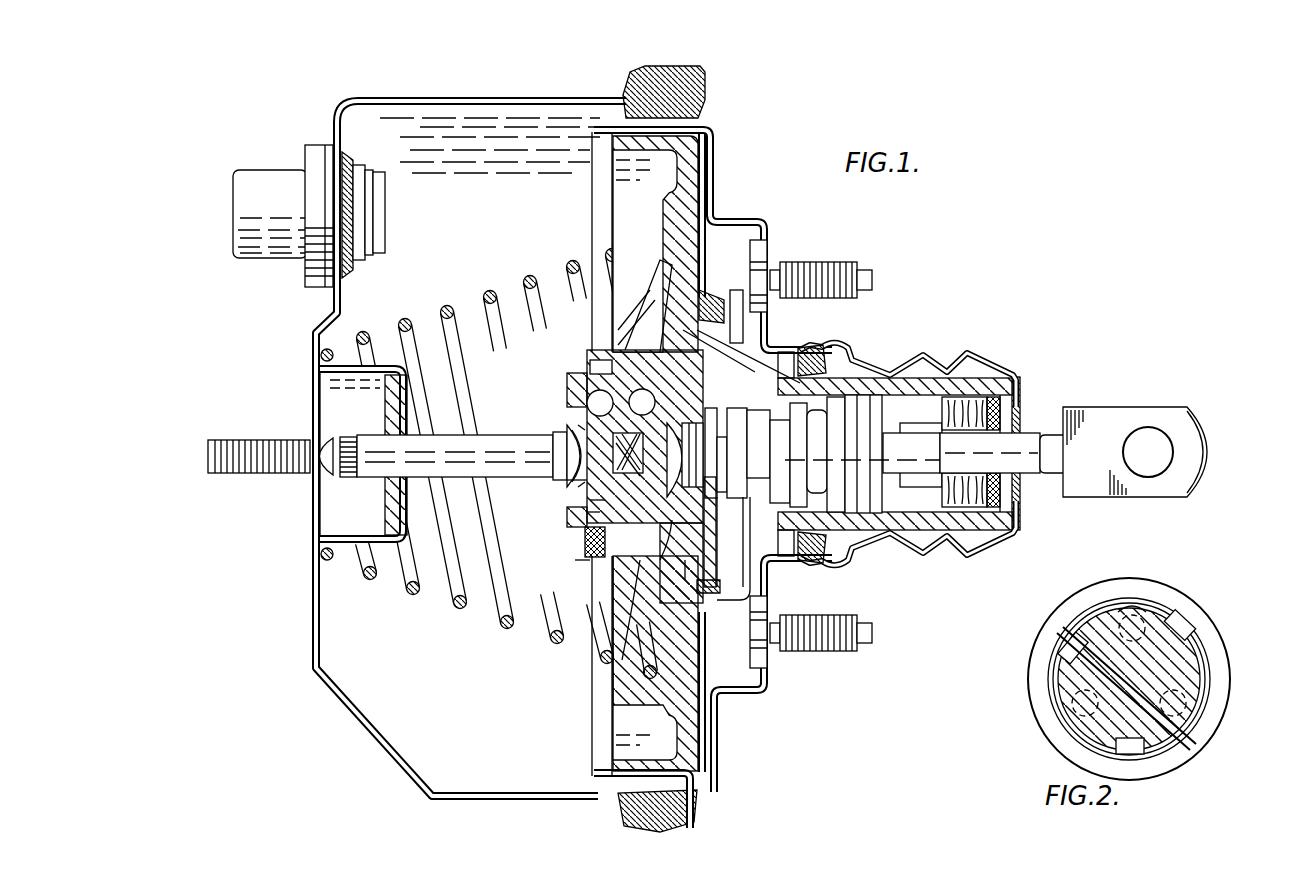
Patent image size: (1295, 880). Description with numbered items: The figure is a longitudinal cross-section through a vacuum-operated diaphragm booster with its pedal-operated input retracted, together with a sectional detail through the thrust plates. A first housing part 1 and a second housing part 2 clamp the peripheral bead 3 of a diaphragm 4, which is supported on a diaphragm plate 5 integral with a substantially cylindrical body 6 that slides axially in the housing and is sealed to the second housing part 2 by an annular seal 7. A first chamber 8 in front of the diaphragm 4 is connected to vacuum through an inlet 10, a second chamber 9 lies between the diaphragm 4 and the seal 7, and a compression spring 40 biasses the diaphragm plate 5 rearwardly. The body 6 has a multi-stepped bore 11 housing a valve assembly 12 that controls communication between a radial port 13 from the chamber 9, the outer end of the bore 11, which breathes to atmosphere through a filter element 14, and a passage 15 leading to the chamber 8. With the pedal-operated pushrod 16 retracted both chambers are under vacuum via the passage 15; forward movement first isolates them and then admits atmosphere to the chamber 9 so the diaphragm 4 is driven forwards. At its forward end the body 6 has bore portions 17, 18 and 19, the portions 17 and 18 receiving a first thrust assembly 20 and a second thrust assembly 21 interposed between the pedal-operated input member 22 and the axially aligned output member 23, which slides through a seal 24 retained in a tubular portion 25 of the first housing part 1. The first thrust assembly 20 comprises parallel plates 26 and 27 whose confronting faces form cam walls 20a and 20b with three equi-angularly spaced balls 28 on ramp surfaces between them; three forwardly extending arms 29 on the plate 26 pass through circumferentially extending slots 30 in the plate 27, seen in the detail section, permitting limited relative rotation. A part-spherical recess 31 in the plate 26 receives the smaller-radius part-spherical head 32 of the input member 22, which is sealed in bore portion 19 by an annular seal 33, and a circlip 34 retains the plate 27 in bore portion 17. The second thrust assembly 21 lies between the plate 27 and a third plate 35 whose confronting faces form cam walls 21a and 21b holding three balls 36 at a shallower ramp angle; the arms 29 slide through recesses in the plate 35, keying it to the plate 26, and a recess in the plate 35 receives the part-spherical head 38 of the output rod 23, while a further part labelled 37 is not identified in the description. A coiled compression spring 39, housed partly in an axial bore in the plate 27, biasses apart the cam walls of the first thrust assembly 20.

In FIG. 1, the first housing part 1 is at (490, 100).
In FIG. 1, the second housing part 2 is at (712, 128).
In FIG. 1, the peripheral bead 3 is at (630, 96).
In FIG. 1, the diaphragm 4 is at (597, 130).
In FIG. 1, the diaphragm plate 5 is at (690, 158).
In FIG. 1, the substantially cylindrical body 6 is at (900, 378).
In FIG. 2, the substantially cylindrical body 6 is at (1200, 740).
In FIG. 1, the annular seal 7 is at (812, 356).
In FIG. 1, the first chamber 8 is at (480, 714).
In FIG. 1, the second chamber 9 is at (717, 669).
In FIG. 1, the inlet 10 is at (268, 192).
In FIG. 1, the multi-stepped bore 11 is at (970, 397).
In FIG. 1, the valve assembly 12 is at (866, 515).
In FIG. 1, the radial port 13 is at (783, 562).
In FIG. 1, the filter element 14 is at (995, 512).
In FIG. 1, the passage 15 is at (767, 340).
In FIG. 1, the pedal-operated pushrod 16 is at (1046, 475).
In FIG. 1, the bore portion 17 is at (592, 365).
In FIG. 1, the bore portion 18 is at (683, 350).
In FIG. 1, the bore portion 19 is at (712, 305).
In FIG. 1, the first thrust assembly 20 is at (635, 530).
In FIG. 1, the cam wall 20a is at (597, 535).
In FIG. 1, the cam wall 20b is at (692, 430).
In FIG. 1, the second thrust assembly 21 is at (588, 500).
In FIG. 1, the cam wall 21a is at (570, 420).
In FIG. 1, the cam wall 21b is at (565, 440).
In FIG. 1, the pedal-operated input member 22 is at (722, 500).
In FIG. 1, the output member 23 is at (386, 450).
In FIG. 1, the seal 24 is at (385, 495).
In FIG. 1, the inwardly extending tubular portion 25 is at (345, 368).
In FIG. 1, the parallel metal plate 26 is at (665, 555).
In FIG. 1, the plate 27 is at (600, 520).
In FIG. 2, the plate 27 is at (1124, 606).
In FIG. 1, the balls 28 is at (655, 375).
In FIG. 1, the forwardly extending arms 29 is at (600, 515).
In FIG. 2, the forwardly extending arms 29 is at (1060, 645).
In FIG. 1, the circumferentially extending slots 30 is at (622, 662).
In FIG. 2, the circumferentially extending slots 30 is at (1183, 615).
In FIG. 1, the part-spherical recess 31 is at (672, 430).
In FIG. 1, the part-spherical head 32 is at (650, 505).
In FIG. 1, the annular seal 33 is at (685, 580).
In FIG. 1, the circlip 34 is at (572, 281).
In FIG. 1, the third plate 35 is at (595, 395).
In FIG. 2, the third plate 35 is at (1085, 725).
In FIG. 1, the balls 36 is at (629, 400).
In FIG. 2, the balls 36 is at (1140, 615).
In FIG. 1, the seat 37 is at (568, 485).
In FIG. 1, the head 38 is at (570, 450).
In FIG. 1, the coiled compression spring 39 is at (575, 564).
In FIG. 1, the compression spring 40 is at (458, 606).